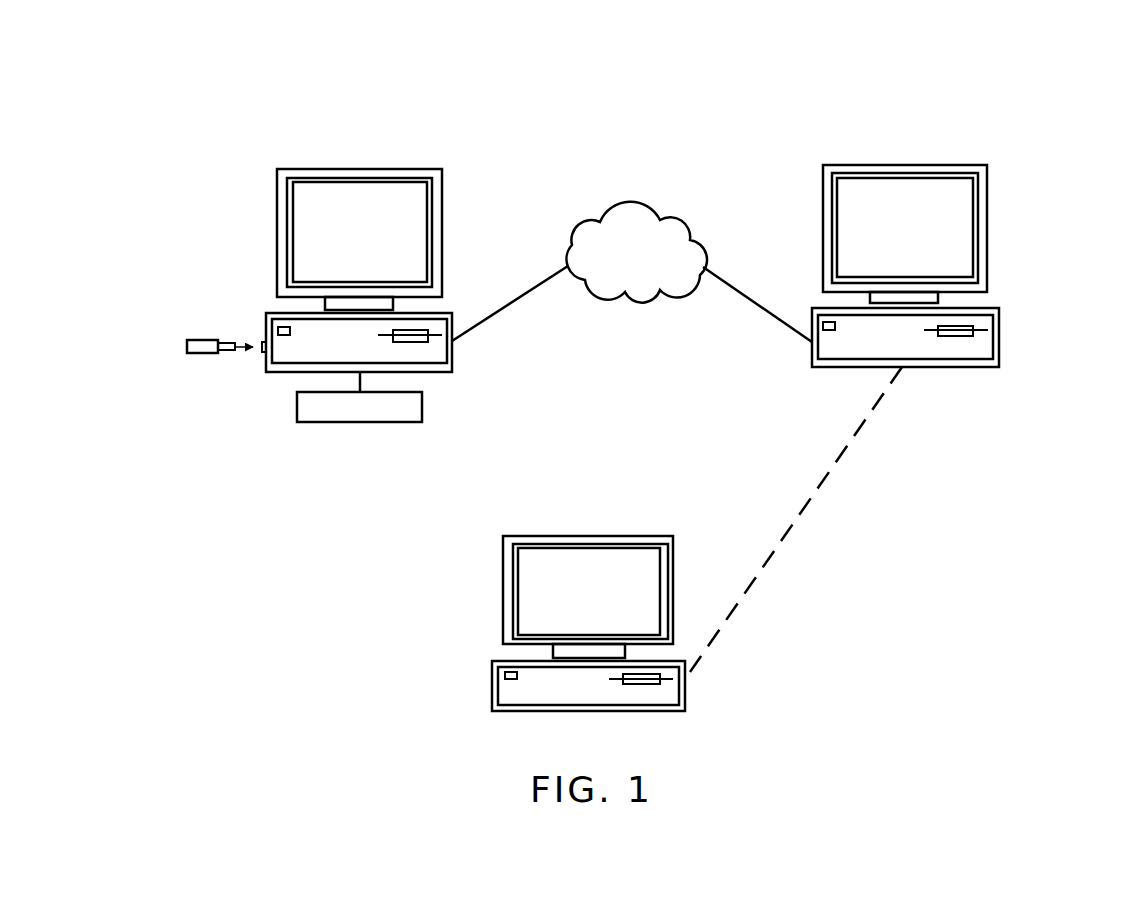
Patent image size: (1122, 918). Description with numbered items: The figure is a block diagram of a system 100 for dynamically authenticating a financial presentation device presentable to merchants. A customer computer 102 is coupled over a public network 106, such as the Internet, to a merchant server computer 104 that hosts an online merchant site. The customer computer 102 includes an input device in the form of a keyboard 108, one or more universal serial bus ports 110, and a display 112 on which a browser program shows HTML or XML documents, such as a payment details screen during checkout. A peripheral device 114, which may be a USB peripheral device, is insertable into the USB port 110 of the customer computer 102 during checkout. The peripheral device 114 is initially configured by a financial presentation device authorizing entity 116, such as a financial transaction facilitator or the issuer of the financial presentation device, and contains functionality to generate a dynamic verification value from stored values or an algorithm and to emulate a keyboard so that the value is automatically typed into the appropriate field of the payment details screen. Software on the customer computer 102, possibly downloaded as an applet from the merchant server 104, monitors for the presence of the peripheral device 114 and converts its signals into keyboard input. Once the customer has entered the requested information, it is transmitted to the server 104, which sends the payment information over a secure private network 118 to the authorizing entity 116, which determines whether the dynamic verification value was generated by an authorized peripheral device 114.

The system 100 is at (125, 75).
The customer computer 102 is at (303, 286).
The merchant server computer 104 is at (1016, 190).
The public network 106 is at (670, 212).
The keyboard 108 is at (422, 410).
The universal serial bus (USB) port 110 is at (257, 357).
The display 112 is at (337, 212).
The peripheral device 114 is at (207, 342).
The financial presentation device authorizing entity 116 is at (477, 616).
The secure private network 118 is at (796, 531).